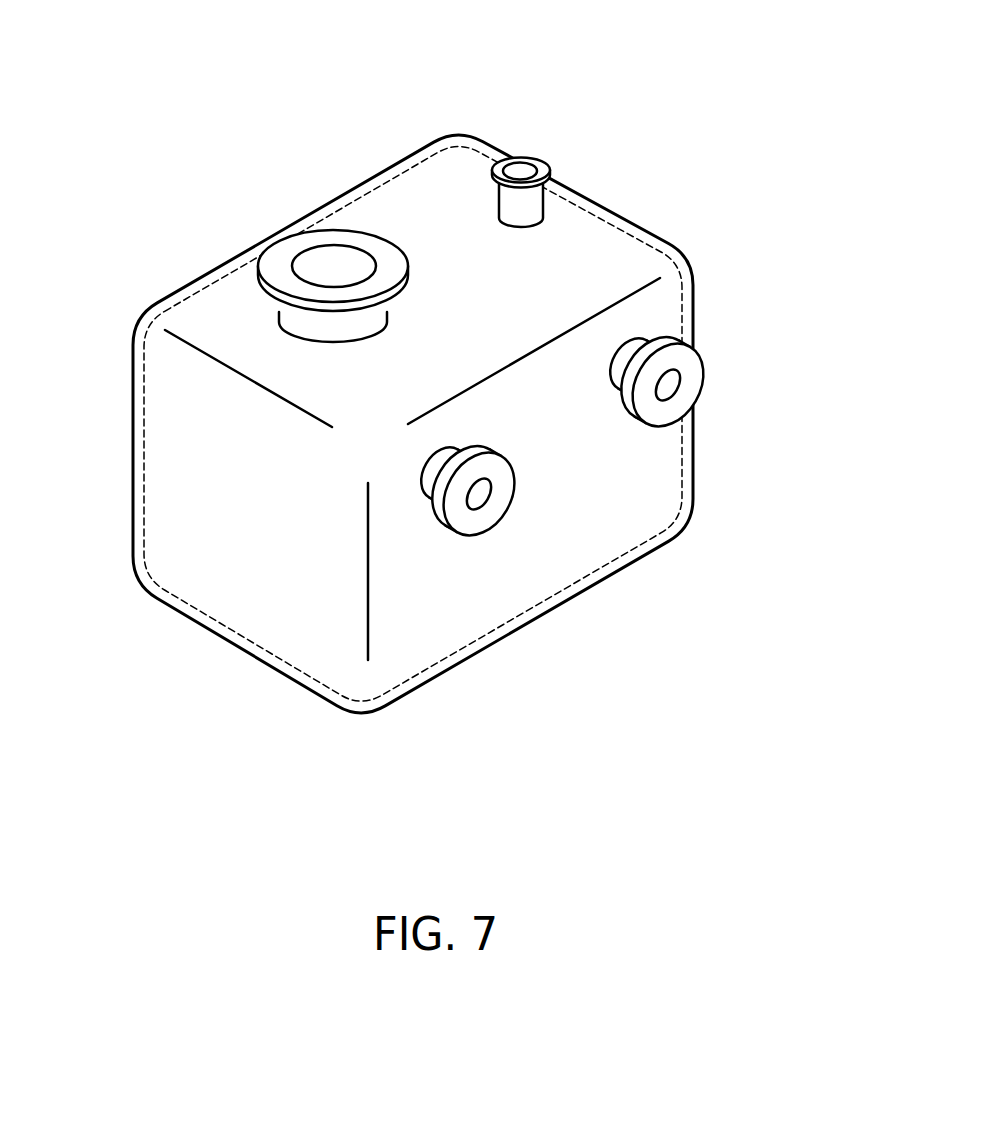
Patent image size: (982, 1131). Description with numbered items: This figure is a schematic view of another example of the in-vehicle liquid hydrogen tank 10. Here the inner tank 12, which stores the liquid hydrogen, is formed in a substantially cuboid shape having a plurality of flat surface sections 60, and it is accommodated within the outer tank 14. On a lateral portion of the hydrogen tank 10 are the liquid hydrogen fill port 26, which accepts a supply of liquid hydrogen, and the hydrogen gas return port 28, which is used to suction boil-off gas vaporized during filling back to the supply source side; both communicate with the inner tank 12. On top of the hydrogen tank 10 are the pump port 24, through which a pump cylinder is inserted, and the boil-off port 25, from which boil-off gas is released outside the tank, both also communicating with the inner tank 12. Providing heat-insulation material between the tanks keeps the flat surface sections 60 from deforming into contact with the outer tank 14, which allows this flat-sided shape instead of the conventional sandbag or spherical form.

The hydrogen tank 10 is at (462, 379).
The inner tank 12 is at (141, 472).
The outer tank 14 is at (130, 368).
The pump port 24 is at (302, 240).
The boil-off port 25 is at (517, 170).
The liquid hydrogen fill port 26 is at (473, 518).
The hydrogen gas return port 28 is at (683, 375).
The flat surface section 60 is at (447, 203).